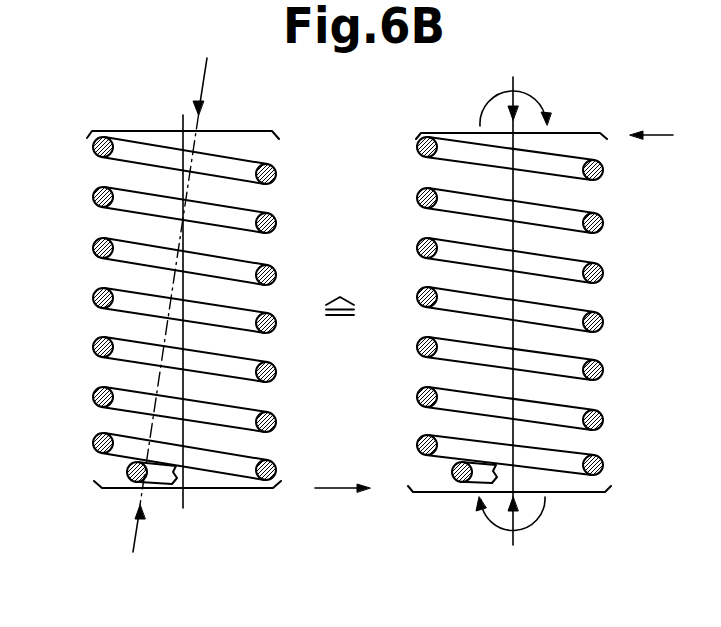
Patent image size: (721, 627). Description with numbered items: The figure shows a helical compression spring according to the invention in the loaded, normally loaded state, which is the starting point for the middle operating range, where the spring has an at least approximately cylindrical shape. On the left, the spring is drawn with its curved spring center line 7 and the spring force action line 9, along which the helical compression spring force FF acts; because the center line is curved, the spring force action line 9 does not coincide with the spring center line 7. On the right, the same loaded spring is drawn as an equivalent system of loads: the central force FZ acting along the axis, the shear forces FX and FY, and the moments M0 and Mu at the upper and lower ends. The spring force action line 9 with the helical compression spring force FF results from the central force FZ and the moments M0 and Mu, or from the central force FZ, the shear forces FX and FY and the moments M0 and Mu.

The spring center line 7 is at (181, 248).
The spring force action line 9 is at (160, 365).
The helical compression spring force FF is at (205, 75).
The central force FZ is at (513, 82).
The shear force FX is at (657, 136).
The shear force FY is at (335, 488).
The moment M0 is at (486, 108).
The moment Mu is at (543, 507).